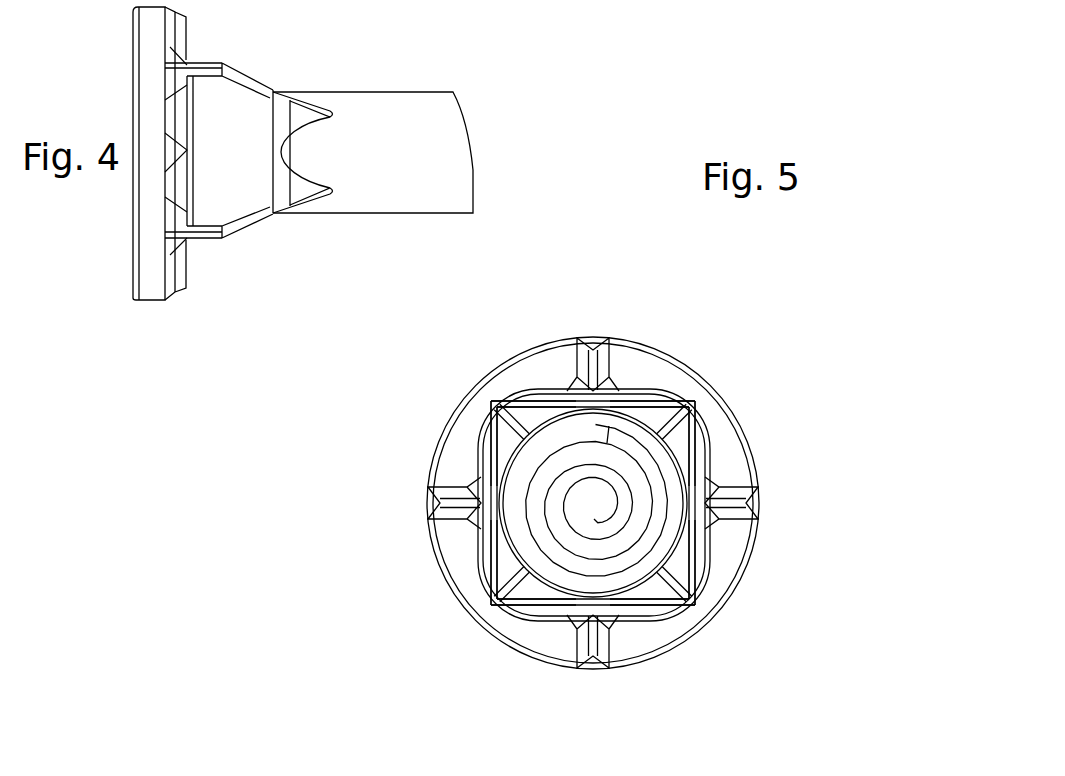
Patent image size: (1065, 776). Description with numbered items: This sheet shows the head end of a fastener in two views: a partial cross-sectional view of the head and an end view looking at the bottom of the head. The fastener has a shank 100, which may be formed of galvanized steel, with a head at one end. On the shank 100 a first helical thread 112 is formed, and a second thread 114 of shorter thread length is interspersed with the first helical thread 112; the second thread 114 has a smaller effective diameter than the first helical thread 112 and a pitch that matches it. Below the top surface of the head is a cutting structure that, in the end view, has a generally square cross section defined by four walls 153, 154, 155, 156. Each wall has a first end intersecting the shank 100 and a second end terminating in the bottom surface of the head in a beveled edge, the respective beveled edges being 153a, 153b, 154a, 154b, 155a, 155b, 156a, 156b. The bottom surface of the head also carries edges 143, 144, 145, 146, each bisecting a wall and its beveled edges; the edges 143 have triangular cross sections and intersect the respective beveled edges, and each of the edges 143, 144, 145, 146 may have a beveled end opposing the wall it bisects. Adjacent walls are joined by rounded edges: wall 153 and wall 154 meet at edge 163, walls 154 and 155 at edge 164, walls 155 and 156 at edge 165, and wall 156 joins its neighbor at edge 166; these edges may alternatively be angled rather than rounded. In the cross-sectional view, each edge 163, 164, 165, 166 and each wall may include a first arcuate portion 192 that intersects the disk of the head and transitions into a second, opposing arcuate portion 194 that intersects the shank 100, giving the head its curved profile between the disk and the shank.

In FIG. 4, the shank 100 is at (373, 110).
In FIG. 4, the first arcuate portion 192 is at (268, 76).
In FIG. 4, the fork clamp portion 194 is at (333, 90).
In FIG. 5, the first helical thread 112 is at (532, 500).
In FIG. 5, the second thread 114 is at (627, 513).
In FIG. 5, the edge 143 is at (587, 363).
In FIG. 5, the edge 144 is at (733, 500).
In FIG. 5, the edge 145 is at (583, 640).
In FIG. 5, the edge 146 is at (448, 500).
In FIG. 5, the wall 153 is at (635, 412).
In FIG. 5, the beveled edge 153a is at (543, 393).
In FIG. 5, the beveled edge 153b is at (625, 392).
In FIG. 5, the wall 154 is at (673, 550).
In FIG. 5, the beveled edge 154a is at (700, 482).
In FIG. 5, the beveled edge 154b is at (673, 587).
In FIG. 5, the wall 155 is at (640, 618).
In FIG. 5, the beveled edge 155a is at (525, 610).
In FIG. 5, the beveled edge 155b is at (617, 642).
In FIG. 5, the wall 156 is at (500, 547).
In FIG. 5, the beveled edge 156a is at (475, 449).
In FIG. 5, the beveled edge 156b is at (487, 558).
In FIG. 5, the rounded edge 163 is at (678, 398).
In FIG. 5, the rounded edge 164 is at (687, 605).
In FIG. 5, the rounded edge 165 is at (482, 588).
In FIG. 5, the rounded edge 166 is at (500, 413).